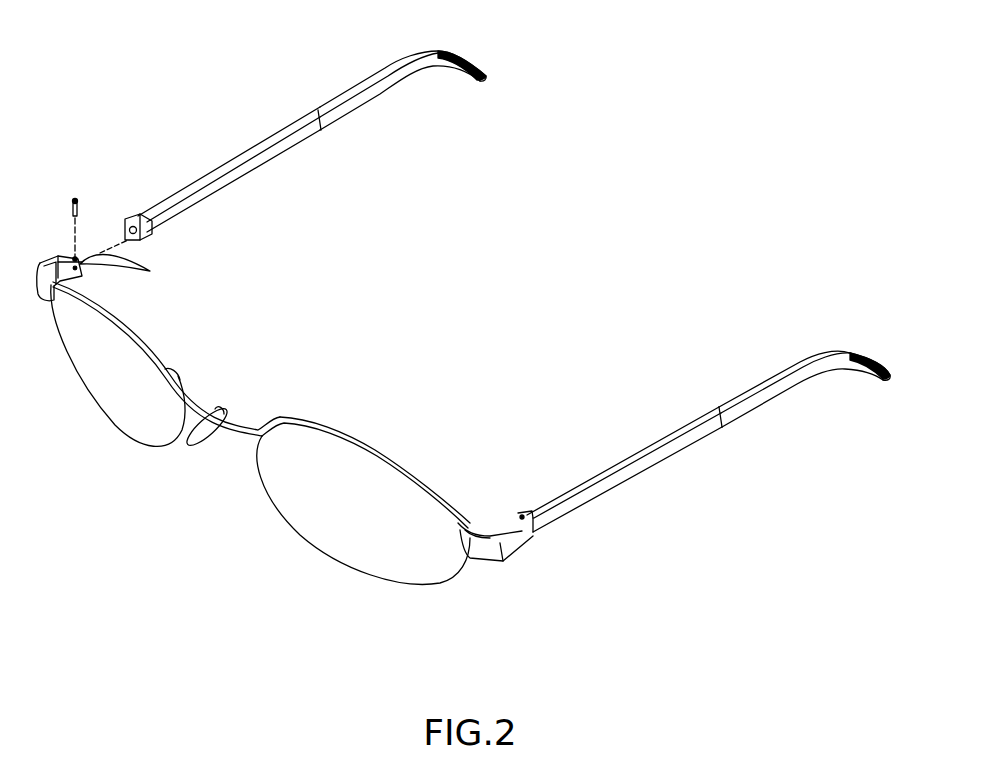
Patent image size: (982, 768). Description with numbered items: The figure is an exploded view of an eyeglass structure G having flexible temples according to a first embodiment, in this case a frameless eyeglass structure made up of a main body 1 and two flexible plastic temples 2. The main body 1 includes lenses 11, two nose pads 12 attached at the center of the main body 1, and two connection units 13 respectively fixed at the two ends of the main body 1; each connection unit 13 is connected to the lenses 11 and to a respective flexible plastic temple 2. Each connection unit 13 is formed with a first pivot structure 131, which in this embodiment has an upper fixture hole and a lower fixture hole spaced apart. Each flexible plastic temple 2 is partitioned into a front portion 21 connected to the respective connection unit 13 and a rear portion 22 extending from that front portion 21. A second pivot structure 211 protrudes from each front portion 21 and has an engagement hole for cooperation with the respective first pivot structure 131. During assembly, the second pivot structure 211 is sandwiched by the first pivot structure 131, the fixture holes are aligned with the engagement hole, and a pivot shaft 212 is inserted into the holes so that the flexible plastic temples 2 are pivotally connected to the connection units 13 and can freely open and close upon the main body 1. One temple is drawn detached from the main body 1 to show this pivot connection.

The main body 1 is at (278, 410).
The lenses 11 is at (115, 400).
The nose pads 12 is at (230, 410).
The connection units 13 is at (278, 410).
The first pivot structure 131 is at (139, 272).
The flexible plastic temples 2 is at (495, 266).
The front portion 21 is at (411, 304).
The second pivot structure 211 is at (127, 220).
The pivot shaft 212 is at (75, 200).
The rear portion 22 is at (605, 227).
The eyeglass structure G is at (843, 237).